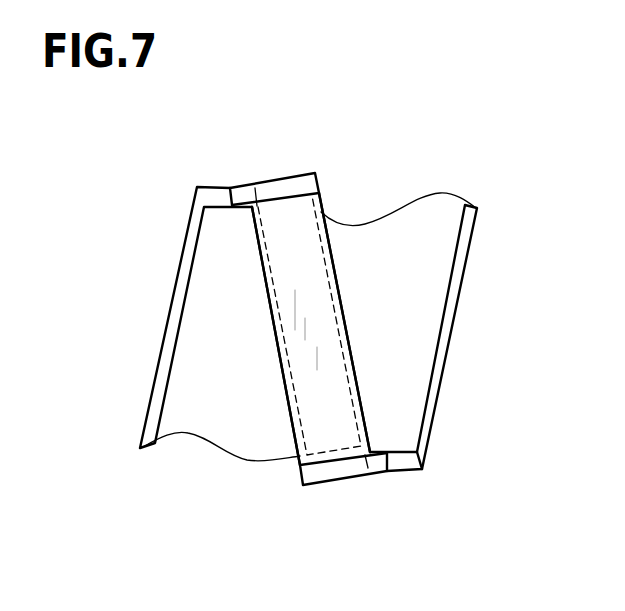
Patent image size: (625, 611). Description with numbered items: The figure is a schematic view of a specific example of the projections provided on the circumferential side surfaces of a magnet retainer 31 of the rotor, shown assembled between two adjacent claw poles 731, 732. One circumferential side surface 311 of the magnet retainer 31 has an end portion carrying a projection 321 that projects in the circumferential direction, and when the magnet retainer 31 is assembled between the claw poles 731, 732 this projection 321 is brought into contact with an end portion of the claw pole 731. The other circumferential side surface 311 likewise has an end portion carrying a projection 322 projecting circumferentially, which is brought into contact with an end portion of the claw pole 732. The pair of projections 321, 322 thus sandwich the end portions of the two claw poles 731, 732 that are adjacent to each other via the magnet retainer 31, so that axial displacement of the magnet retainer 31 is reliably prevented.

The magnet retainer 31 is at (318, 190).
The circumferential side surface 311 is at (355, 372).
The projection 321 is at (238, 198).
The projection 322 is at (379, 461).
The claw pole 731 is at (203, 305).
The claw pole 732 is at (428, 220).